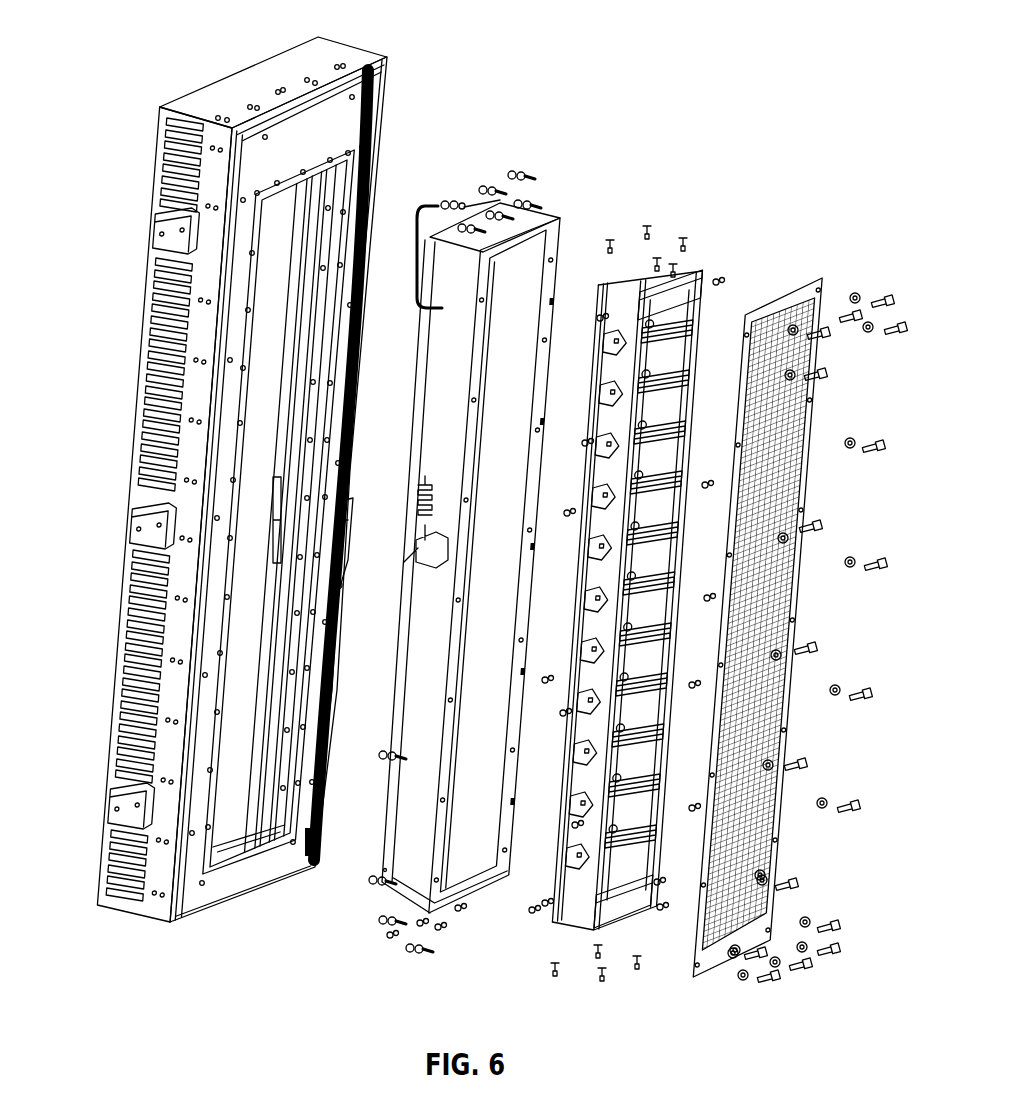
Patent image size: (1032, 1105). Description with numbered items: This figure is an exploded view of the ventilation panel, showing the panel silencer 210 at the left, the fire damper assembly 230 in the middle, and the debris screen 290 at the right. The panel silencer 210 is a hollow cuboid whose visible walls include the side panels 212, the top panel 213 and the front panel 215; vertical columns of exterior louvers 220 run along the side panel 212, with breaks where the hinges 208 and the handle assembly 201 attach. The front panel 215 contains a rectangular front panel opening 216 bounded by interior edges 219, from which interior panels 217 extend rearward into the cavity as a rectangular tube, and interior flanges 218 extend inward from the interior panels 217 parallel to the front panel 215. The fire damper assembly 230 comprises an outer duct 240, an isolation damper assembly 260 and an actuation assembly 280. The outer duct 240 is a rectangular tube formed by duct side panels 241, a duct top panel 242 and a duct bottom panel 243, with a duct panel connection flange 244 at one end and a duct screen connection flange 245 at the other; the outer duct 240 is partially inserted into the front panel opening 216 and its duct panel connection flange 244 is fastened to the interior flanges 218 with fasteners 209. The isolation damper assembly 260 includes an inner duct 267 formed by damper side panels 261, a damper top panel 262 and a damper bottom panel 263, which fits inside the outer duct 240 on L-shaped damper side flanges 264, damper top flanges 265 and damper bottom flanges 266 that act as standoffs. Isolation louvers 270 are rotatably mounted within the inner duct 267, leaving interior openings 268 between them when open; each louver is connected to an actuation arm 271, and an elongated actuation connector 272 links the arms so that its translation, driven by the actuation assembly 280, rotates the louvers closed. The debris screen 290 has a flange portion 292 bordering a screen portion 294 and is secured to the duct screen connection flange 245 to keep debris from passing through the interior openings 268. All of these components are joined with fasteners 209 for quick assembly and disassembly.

The handle assembly 201 is at (358, 515).
The hinges 208 is at (152, 232).
The fasteners 209 is at (378, 920).
The panel silencer 210 is at (355, 31).
The side panels 212 is at (160, 200).
The top panel 213 is at (257, 77).
The front panel 215 is at (350, 122).
The front panel opening 216 is at (285, 205).
The interior panels 217 is at (283, 752).
The interior flanges 218 is at (263, 722).
The interior edges 219 is at (335, 212).
The exterior louvers 220 is at (172, 150).
The fire damper assembly 230 is at (737, 160).
The outer duct 240 is at (566, 232).
The duct side panels 241 is at (372, 880).
The duct top panel 242 is at (500, 202).
The duct bottom panel 243 is at (468, 875).
The duct panel connection flange 244 is at (382, 757).
The duct screen connection flange 245 is at (467, 698).
The isolation damper assembly 260 is at (705, 260).
The damper side panels 261 is at (700, 358).
The damper top panel 262 is at (650, 285).
The damper bottom panel 263 is at (650, 898).
The damper side flanges 264 is at (550, 893).
The damper top flanges 265 is at (705, 262).
The damper bottom flanges 266 is at (630, 922).
The inner duct 267 is at (580, 910).
The interior openings 268 is at (650, 755).
The isolation louvers 270 is at (680, 470).
The actuation arms 271 is at (585, 540).
The actuation connector 272 is at (585, 478).
The actuation assembly 280 is at (440, 312).
The debris screen 290 is at (800, 270).
The flange portion 292 is at (826, 298).
The screen portion 294 is at (800, 362).